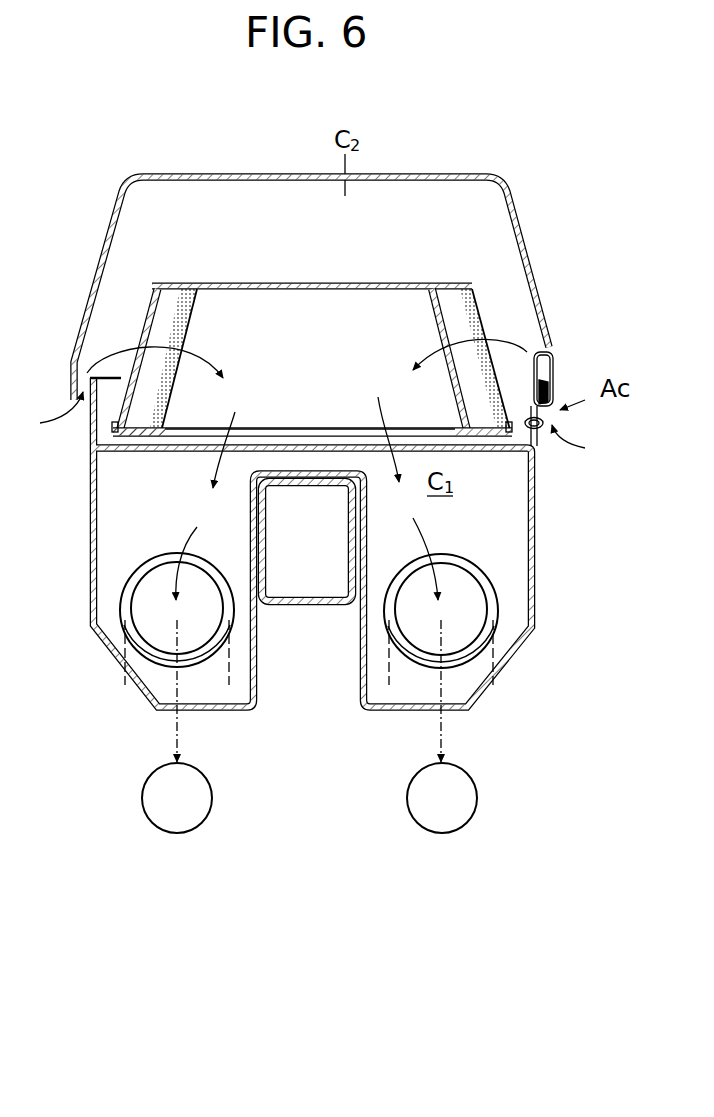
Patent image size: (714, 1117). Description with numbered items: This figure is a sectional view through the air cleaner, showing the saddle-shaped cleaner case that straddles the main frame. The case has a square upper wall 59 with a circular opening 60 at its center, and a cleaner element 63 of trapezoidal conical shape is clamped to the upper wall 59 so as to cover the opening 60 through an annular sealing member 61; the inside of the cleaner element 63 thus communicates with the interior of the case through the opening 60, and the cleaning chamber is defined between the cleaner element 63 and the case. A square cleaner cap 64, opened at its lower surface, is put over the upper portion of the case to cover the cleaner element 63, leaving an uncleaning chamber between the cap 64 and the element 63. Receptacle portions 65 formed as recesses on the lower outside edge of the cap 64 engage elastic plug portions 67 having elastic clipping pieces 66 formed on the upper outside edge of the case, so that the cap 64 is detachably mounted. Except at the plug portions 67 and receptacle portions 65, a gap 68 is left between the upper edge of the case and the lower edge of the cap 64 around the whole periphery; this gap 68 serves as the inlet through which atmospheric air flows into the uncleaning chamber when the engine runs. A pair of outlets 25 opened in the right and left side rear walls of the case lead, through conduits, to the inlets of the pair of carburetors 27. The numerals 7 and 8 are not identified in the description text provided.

The square tube 7 is at (305, 600).
The housing body 8 is at (92, 545).
The outlet 25 is at (133, 606).
The carburetor 27 is at (152, 800).
The upper wall 59 is at (153, 440).
The circular opening 60 is at (172, 440).
The annular sealing member 61 is at (136, 440).
The cleaner element 63 is at (458, 312).
The cleaner cap 64 is at (521, 238).
The receptacle portion 65 is at (545, 371).
The elastic clipping piece 66 is at (548, 390).
The elastic plug portion 67 is at (531, 398).
The gap 68 is at (62, 425).